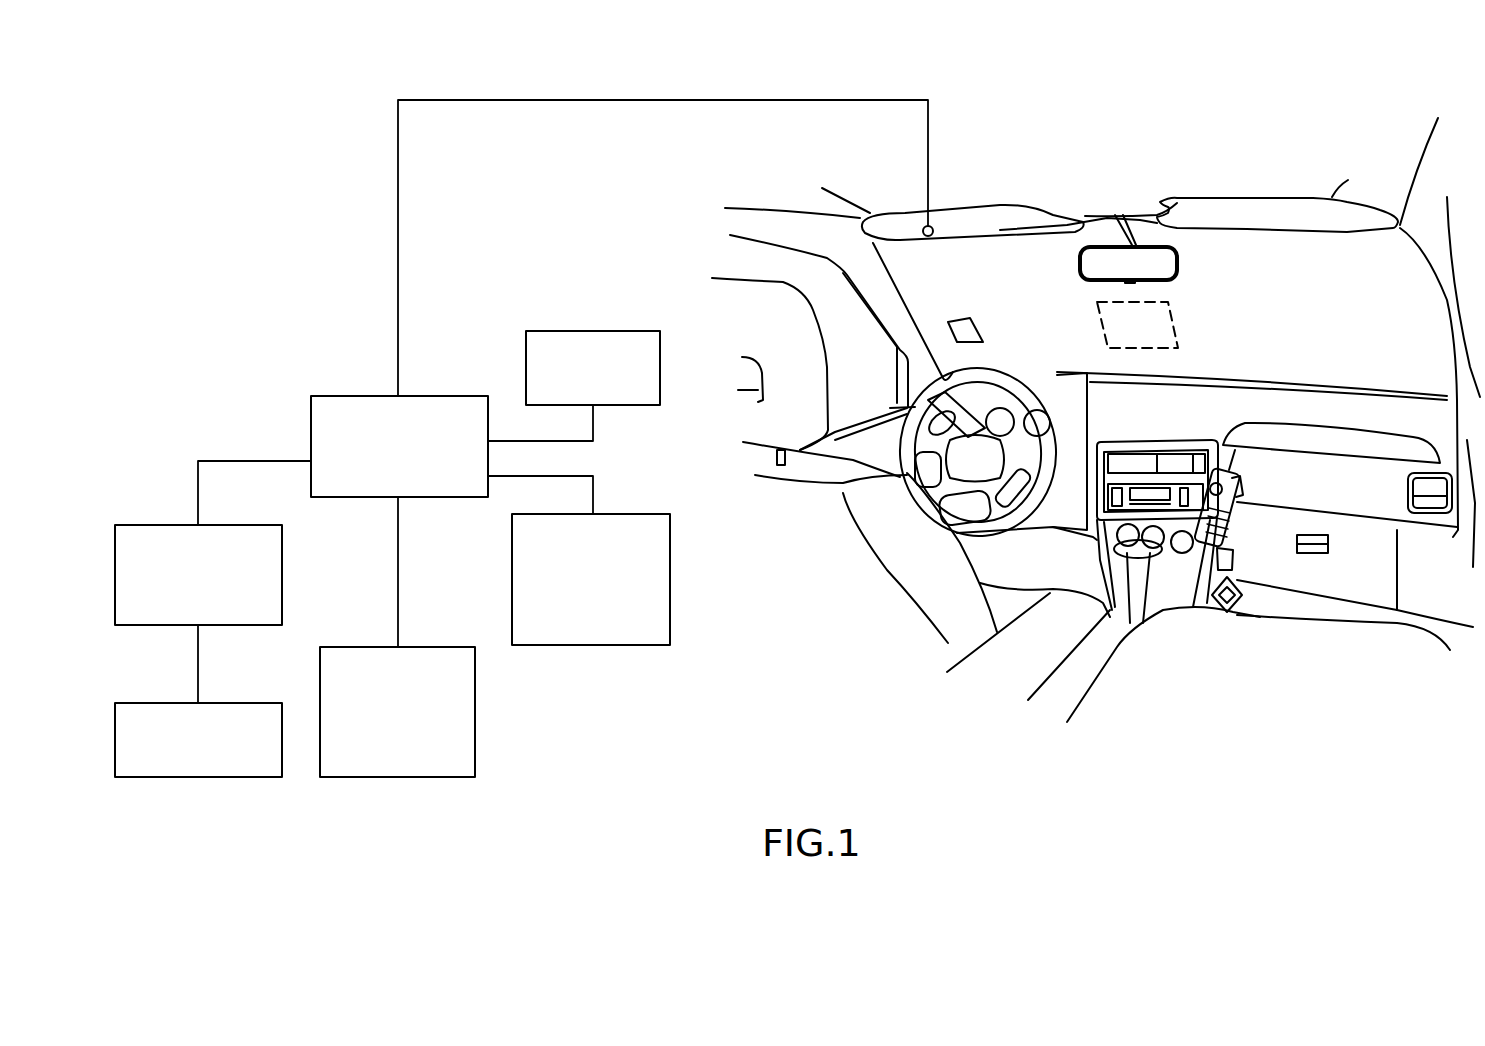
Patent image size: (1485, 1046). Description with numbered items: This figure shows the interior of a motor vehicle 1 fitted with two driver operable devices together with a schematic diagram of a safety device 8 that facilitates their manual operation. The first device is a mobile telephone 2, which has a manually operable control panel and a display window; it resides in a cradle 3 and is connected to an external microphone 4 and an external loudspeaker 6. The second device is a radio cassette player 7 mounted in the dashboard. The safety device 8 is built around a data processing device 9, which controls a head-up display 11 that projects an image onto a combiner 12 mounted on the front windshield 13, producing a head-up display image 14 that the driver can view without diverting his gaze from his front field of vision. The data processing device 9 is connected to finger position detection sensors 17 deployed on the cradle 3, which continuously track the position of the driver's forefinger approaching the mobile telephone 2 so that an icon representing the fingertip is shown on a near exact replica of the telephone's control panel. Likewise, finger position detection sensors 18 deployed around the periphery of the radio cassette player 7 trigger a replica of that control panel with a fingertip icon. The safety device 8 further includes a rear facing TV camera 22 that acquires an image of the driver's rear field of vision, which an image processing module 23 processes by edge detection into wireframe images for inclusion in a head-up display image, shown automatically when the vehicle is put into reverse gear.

The motor vehicle 1 is at (1156, 122).
The mobile telephone 2 is at (1212, 515).
The cradle 3 is at (1227, 520).
The external microphone 4 is at (933, 231).
The external loudspeaker 6 is at (1240, 613).
The radio cassette player 7 is at (1177, 507).
The safety device 8 is at (179, 248).
The data processing device 9 is at (425, 395).
The head-up display 11 is at (585, 331).
The combiner 12 is at (983, 333).
The front windshield 13 is at (1223, 250).
The head-up display image 14 is at (1173, 323).
The finger position detection sensors 17 is at (443, 646).
The finger position detection sensors 18 is at (618, 513).
The TV camera 22 is at (228, 777).
The image processing module 23 is at (233, 625).